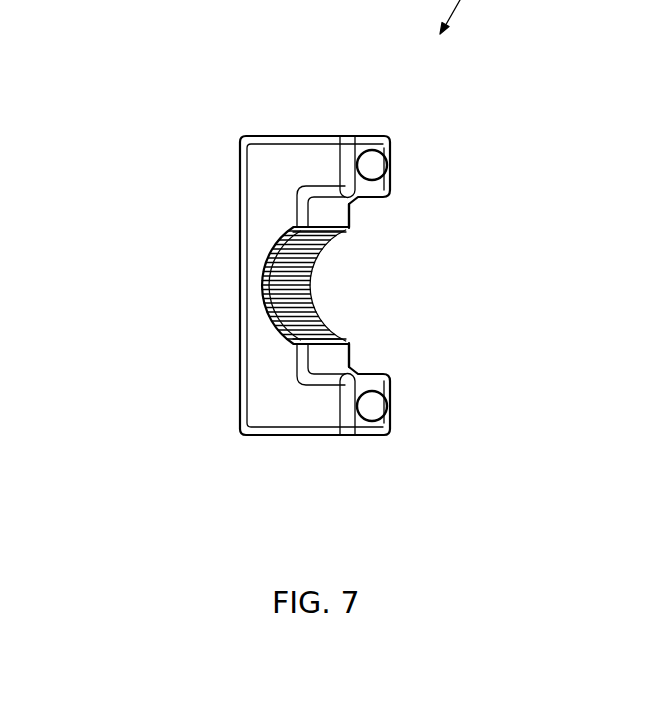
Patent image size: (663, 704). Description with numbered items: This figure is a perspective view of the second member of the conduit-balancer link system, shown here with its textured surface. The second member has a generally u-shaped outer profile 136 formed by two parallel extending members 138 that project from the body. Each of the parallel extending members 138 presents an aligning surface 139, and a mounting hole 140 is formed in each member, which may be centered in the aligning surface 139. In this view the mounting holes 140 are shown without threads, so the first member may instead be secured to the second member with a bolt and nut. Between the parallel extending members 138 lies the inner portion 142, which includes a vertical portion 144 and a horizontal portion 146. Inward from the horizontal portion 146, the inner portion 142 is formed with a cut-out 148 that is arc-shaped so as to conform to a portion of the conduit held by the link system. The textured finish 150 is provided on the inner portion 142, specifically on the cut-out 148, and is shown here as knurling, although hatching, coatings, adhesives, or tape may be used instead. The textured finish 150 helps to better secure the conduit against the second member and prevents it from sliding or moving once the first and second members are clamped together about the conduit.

The u-shaped outer profile 136 is at (266, 440).
The parallel extending members 138 is at (325, 135).
The aligning surface 139 is at (392, 164).
The mounting hole 140 is at (376, 150).
The inner portion 142 is at (318, 309).
The vertical portion 144 is at (372, 206).
The horizontal portion 146 is at (348, 221).
The cut-out 148 is at (232, 264).
The textured finish 150 is at (316, 286).